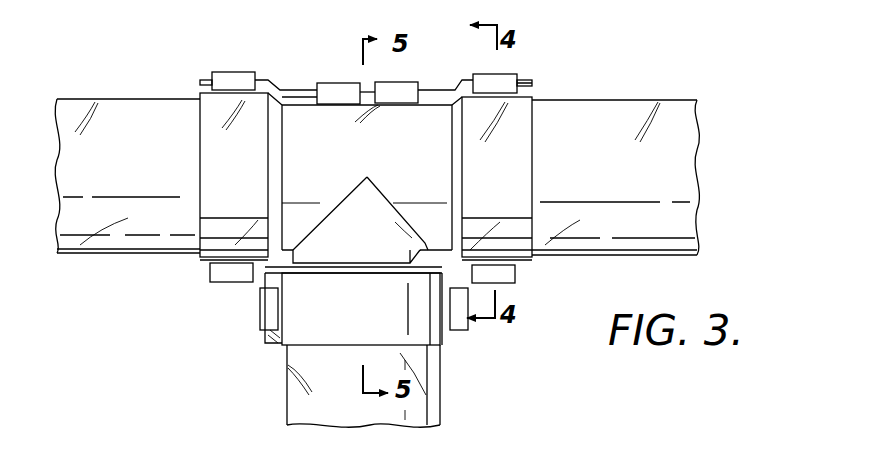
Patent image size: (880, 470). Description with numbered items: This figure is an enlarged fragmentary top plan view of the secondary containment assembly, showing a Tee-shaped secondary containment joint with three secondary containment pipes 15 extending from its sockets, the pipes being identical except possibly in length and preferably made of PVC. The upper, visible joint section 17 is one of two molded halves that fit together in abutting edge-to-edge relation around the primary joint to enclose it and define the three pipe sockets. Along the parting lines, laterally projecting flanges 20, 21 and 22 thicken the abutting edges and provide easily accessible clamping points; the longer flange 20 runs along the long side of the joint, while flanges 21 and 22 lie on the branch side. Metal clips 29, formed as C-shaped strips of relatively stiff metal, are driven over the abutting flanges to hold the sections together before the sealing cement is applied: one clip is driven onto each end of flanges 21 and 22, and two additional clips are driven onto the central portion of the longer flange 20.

The secondary containment pipe 15 is at (112, 118).
The joint section 17 is at (515, 137).
The flange 20 is at (202, 82).
The flange 21 is at (200, 267).
The flange 22 is at (532, 265).
The clip 29 is at (327, 85).